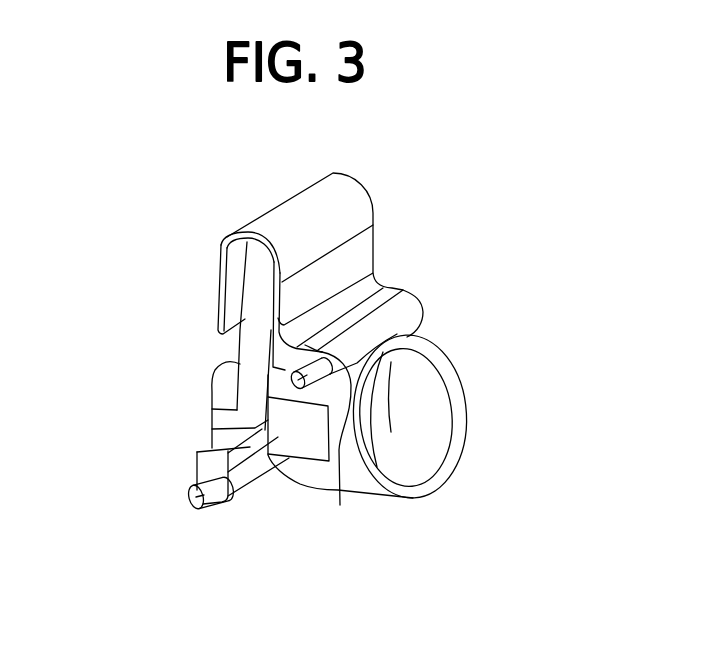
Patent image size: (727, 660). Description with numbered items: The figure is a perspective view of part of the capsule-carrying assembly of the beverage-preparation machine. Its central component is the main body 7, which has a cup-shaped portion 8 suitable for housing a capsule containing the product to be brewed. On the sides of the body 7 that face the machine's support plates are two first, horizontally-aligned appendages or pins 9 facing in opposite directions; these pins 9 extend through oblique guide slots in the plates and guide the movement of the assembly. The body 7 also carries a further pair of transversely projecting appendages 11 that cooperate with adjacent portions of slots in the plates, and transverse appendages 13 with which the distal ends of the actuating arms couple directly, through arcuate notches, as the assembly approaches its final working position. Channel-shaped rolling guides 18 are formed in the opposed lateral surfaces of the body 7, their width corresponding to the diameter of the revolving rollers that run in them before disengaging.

The main body 7 is at (422, 207).
The cup-shaped portion 8 is at (323, 477).
The pin 9 is at (207, 493).
The transversely projecting appendage 11 is at (340, 505).
The transverse appendage 13 is at (262, 458).
The rolling guide 18 is at (245, 293).